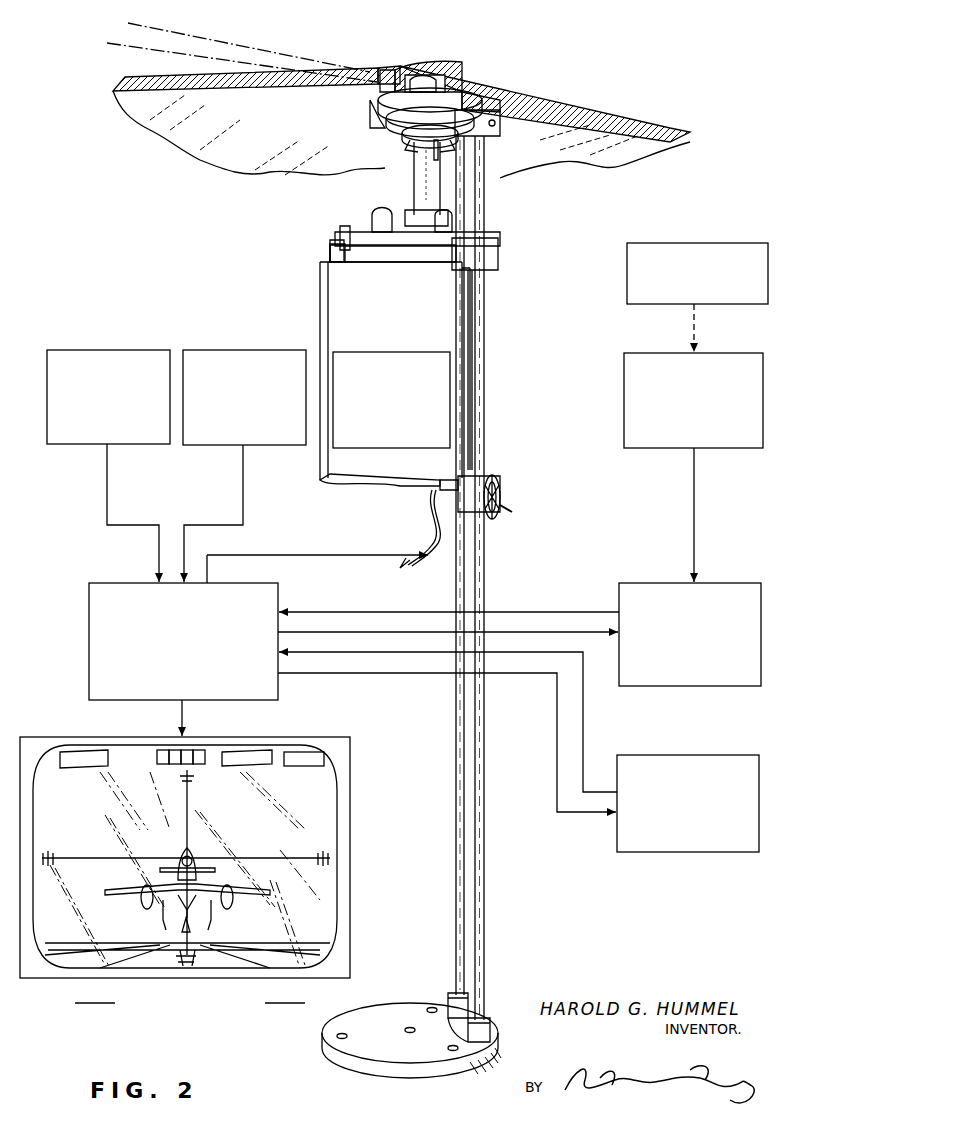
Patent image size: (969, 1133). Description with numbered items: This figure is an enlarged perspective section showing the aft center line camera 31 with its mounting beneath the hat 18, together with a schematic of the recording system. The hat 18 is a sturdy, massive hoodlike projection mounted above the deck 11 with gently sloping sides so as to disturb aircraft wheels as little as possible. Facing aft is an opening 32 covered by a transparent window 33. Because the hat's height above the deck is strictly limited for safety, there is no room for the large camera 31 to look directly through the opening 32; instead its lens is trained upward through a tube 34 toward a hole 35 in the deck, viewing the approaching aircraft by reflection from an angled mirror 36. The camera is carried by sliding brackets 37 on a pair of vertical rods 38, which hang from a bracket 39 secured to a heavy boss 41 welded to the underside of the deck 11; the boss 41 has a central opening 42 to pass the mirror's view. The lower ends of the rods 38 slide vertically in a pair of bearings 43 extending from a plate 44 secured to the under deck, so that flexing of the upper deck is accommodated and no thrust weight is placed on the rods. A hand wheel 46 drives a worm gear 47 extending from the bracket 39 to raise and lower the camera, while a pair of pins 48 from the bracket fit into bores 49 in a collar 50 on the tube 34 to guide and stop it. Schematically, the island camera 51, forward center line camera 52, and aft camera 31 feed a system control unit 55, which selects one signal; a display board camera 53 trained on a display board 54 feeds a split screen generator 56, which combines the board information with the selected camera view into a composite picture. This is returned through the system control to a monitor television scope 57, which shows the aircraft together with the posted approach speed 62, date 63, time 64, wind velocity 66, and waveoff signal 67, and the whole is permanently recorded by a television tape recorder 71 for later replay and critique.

The deck 11 is at (628, 128).
The hat 18 is at (488, 86).
The aft center line camera 31 is at (400, 326).
The opening 32 is at (372, 70).
The transparent window 33 is at (386, 80).
The tube 34 is at (418, 197).
The hole 35 is at (380, 108).
The angled mirror 36 is at (418, 90).
The sliding brackets 37 is at (494, 252).
The vertical rods 38 is at (487, 233).
The bracket 39 is at (512, 96).
The boss 41 is at (447, 100).
The central opening 42 is at (420, 148).
The bearings 43 is at (448, 1002).
The plate 44 is at (385, 1025).
The hand wheel 46 is at (504, 490).
The worm gear 47 is at (478, 335).
The pins 48 is at (412, 125).
The bores 49 is at (436, 152).
The collar 50 is at (445, 140).
The island camera 51 is at (104, 350).
The forward center line camera 52 is at (244, 350).
The display board camera 53 is at (658, 353).
The display board 54 is at (663, 243).
The system control unit 55 is at (90, 631).
The split screen generator 56 is at (657, 583).
The monitor television scope 57 is at (345, 768).
The aircraft approach speed 62 is at (78, 748).
The date 63 is at (134, 748).
The time 64 is at (196, 748).
The wind velocity 66 is at (268, 748).
The waveoff signal 67 is at (312, 752).
The television tape recorder 71 is at (688, 787).